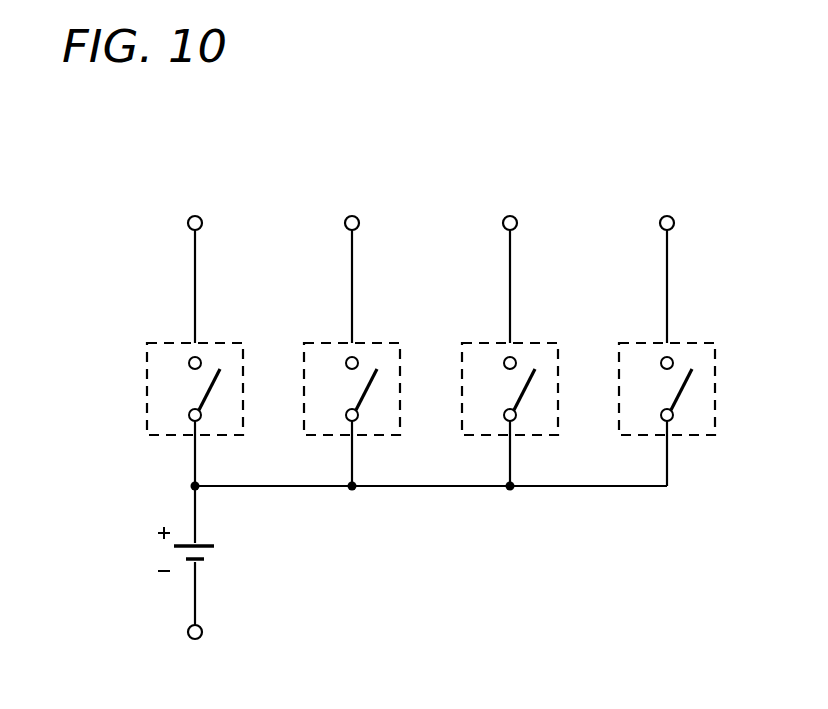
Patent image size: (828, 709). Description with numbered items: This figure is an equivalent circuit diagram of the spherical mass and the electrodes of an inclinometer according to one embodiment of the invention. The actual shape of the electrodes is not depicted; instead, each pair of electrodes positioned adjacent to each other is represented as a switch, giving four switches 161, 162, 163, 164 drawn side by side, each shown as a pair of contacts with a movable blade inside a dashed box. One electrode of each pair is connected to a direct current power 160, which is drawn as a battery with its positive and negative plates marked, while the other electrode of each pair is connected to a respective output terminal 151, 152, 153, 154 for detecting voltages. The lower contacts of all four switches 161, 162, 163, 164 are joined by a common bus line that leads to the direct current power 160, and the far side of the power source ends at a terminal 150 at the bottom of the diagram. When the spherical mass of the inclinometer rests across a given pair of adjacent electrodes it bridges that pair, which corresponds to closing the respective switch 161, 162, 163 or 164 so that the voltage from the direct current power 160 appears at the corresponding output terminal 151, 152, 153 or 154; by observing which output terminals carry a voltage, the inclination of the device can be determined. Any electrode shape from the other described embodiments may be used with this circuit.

The power supply terminal 150 is at (202, 631).
The output terminal 151 is at (193, 215).
The output terminal 152 is at (350, 215).
The output terminal 153 is at (508, 215).
The output terminal 154 is at (665, 215).
The direct current power 160 is at (216, 553).
The switch 161 is at (222, 342).
The switch 162 is at (379, 342).
The switch 163 is at (537, 342).
The switch 164 is at (694, 342).